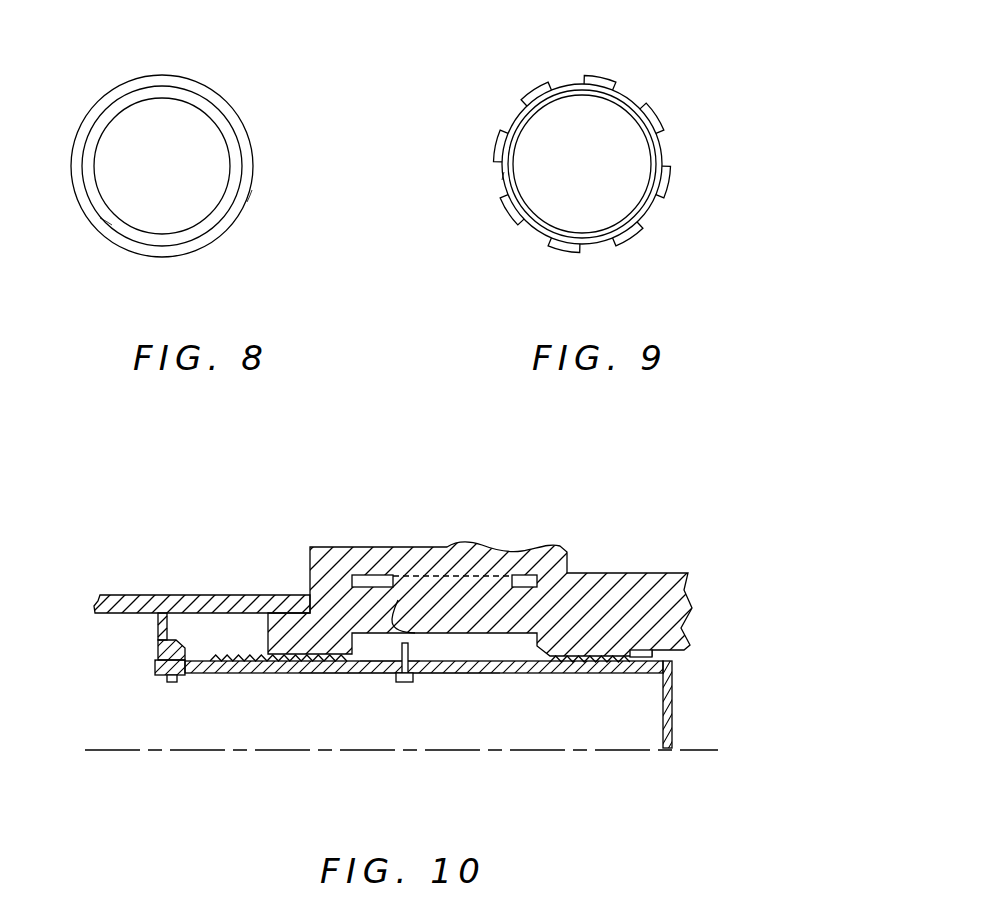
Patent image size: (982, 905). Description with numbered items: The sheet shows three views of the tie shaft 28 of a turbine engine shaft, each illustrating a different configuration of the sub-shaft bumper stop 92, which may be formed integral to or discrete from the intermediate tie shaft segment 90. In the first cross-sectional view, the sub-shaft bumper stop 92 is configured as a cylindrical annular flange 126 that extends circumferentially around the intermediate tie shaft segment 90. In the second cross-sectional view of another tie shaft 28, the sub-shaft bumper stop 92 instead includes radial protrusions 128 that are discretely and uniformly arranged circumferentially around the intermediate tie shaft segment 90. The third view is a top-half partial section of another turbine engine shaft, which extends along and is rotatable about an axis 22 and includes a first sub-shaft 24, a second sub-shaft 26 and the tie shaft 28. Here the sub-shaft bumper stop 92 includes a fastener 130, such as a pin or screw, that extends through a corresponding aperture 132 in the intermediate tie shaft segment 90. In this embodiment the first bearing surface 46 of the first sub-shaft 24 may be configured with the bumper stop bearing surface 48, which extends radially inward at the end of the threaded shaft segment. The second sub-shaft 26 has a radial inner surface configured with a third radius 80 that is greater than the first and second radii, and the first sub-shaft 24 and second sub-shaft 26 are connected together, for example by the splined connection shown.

In FIG. 10, the axis 22 is at (108, 753).
In FIG. 10, the turbine engine first sub-shaft 24 is at (129, 595).
In FIG. 10, the turbine engine second sub-shaft 26 is at (638, 573).
In FIG. 8, the turbine engine tie shaft 28 is at (265, 76).
In FIG. 9, the turbine engine tie shaft 28 is at (686, 77).
In FIG. 10, the turbine engine tie shaft 28 is at (495, 674).
In FIG. 10, the first bearing surface 46 is at (353, 586).
In FIG. 10, the bumper stop bearing surface 48 is at (398, 600).
In FIG. 8, the third radius 80 is at (197, 231).
In FIG. 9, the third radius 80 is at (542, 226).
In FIG. 10, the third radius 80 is at (197, 676).
In FIG. 8, the intermediate tie shaft segment 90 is at (100, 218).
In FIG. 9, the intermediate tie shaft segment 90 is at (498, 180).
In FIG. 10, the intermediate tie shaft segment 90 is at (453, 677).
In FIG. 8, the sub-shaft bumper stop 92 is at (252, 139).
In FIG. 9, the sub-shaft bumper stop 92 is at (675, 185).
In FIG. 10, the sub-shaft bumper stop 92 is at (380, 684).
In FIG. 8, the annular flange 126 is at (247, 202).
In FIG. 9, the radial protrusions 128 is at (636, 243).
In FIG. 10, the fastener 130 is at (405, 683).
In FIG. 10, the aperture 132 is at (377, 665).